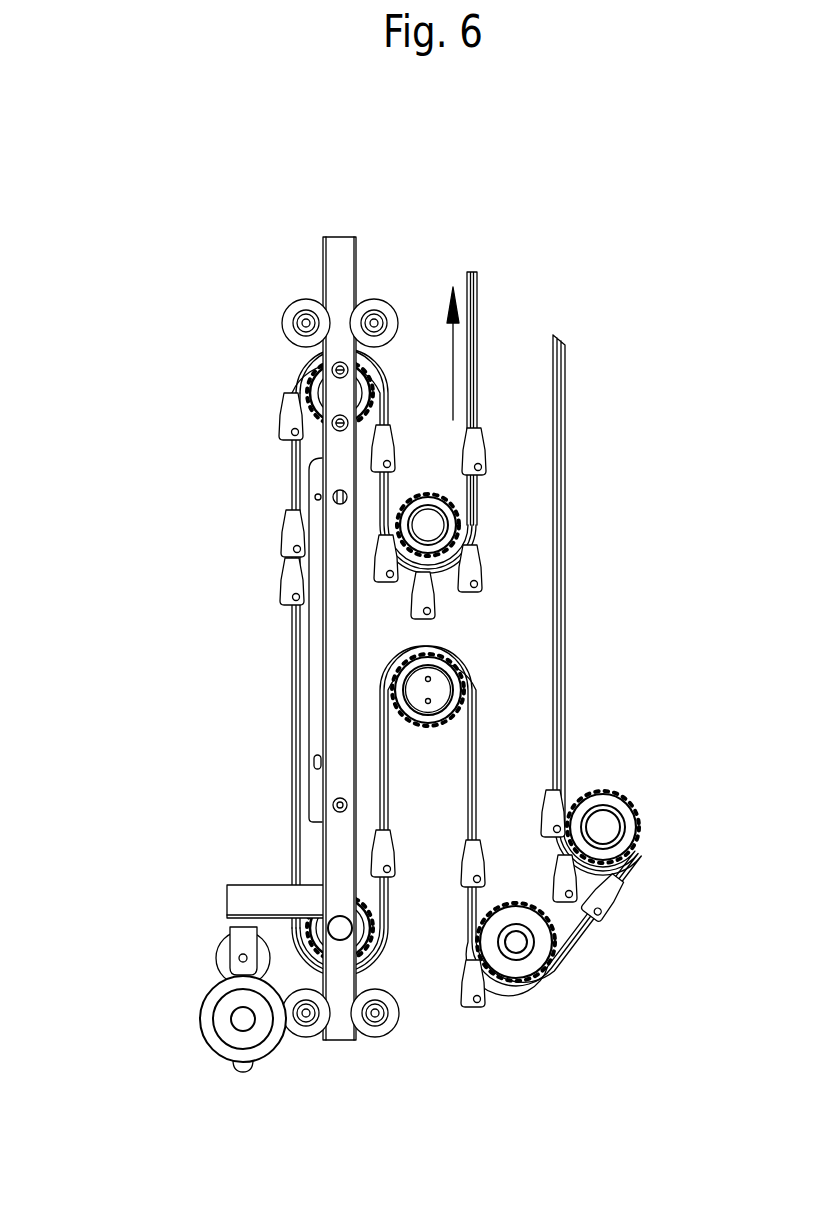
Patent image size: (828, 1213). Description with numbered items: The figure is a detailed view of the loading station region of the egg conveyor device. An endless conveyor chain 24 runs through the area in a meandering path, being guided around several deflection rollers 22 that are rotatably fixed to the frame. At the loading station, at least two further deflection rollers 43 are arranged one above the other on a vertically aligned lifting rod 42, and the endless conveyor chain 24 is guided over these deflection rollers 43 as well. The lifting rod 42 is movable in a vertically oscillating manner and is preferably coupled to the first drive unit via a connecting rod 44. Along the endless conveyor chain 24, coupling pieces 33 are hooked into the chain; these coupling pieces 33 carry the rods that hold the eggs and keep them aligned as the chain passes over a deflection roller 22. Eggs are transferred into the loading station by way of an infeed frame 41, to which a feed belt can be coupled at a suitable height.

The deflection roller 22 is at (458, 514).
The endless conveyor chain 24 is at (467, 308).
The coupling piece 33 is at (470, 564).
The infeed frame 41 is at (284, 714).
The lifting rod 42 is at (342, 268).
The deflection roller 43 is at (313, 383).
The connecting rod 44 is at (184, 1024).